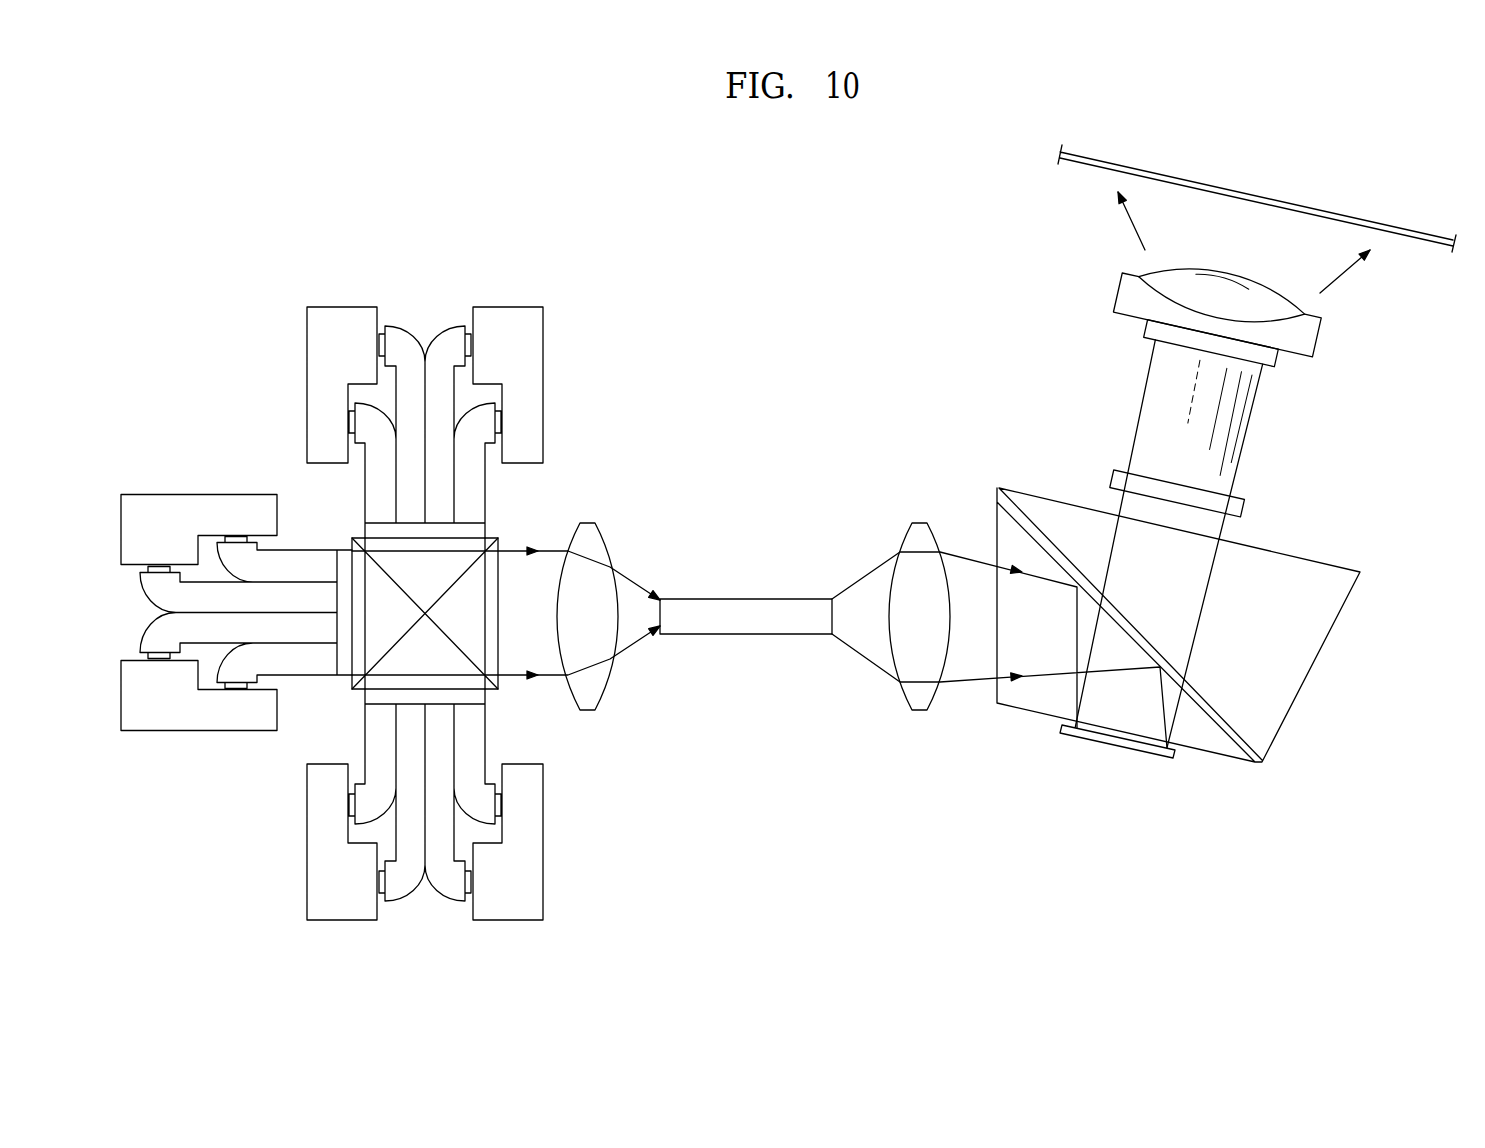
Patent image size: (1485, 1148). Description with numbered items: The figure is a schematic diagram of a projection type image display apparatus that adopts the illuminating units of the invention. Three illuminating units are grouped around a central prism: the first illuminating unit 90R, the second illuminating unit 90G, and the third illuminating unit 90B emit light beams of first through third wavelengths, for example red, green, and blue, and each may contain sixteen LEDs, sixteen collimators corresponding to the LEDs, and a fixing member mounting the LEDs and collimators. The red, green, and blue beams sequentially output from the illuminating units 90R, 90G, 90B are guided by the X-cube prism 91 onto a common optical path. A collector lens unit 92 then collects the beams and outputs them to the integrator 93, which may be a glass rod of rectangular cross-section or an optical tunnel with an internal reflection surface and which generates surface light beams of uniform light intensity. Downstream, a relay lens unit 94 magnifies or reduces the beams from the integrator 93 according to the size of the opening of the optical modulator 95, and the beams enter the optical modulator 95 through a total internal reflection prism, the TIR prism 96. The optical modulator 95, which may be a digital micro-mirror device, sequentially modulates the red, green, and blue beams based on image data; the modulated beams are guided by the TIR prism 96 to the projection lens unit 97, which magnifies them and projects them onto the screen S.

The third illuminating unit 90B is at (363, 489).
The second illuminating unit 90G is at (310, 676).
The first illuminating unit 90R is at (488, 745).
The X-cube prism 91 is at (501, 579).
The collector lens unit 92 is at (588, 522).
The integrator 93 is at (747, 599).
The relay lens unit 94 is at (918, 522).
The optical modulator 95 is at (1120, 747).
The TIR prism 96 is at (1313, 668).
The projection lens unit 97 is at (1303, 375).
The screen S is at (1267, 200).